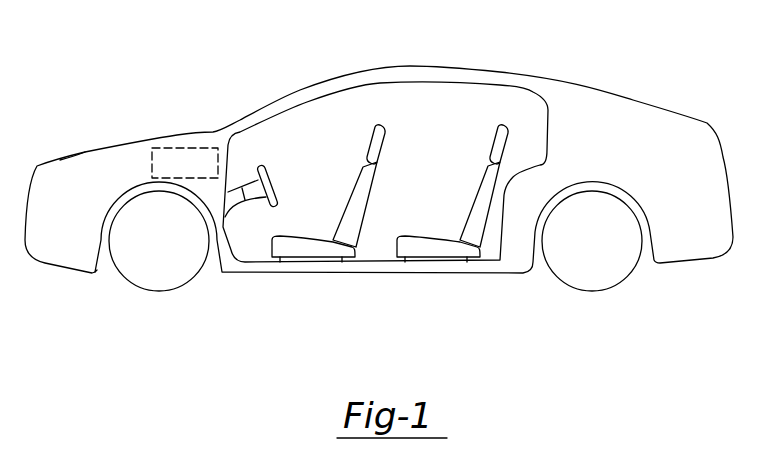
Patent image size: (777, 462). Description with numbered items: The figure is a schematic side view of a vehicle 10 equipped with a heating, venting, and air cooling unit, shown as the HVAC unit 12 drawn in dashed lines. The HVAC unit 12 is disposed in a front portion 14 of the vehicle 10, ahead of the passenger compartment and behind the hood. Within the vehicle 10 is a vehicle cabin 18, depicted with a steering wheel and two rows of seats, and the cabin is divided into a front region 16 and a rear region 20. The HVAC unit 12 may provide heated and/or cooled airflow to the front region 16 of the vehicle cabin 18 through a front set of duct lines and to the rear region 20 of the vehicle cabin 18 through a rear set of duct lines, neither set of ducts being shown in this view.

The vehicle 10 is at (558, 69).
The HVAC unit 12 is at (175, 147).
The front portion 14 is at (85, 153).
The front region 16 is at (287, 122).
The vehicle cabin 18 is at (400, 114).
The rear region 20 is at (457, 103).